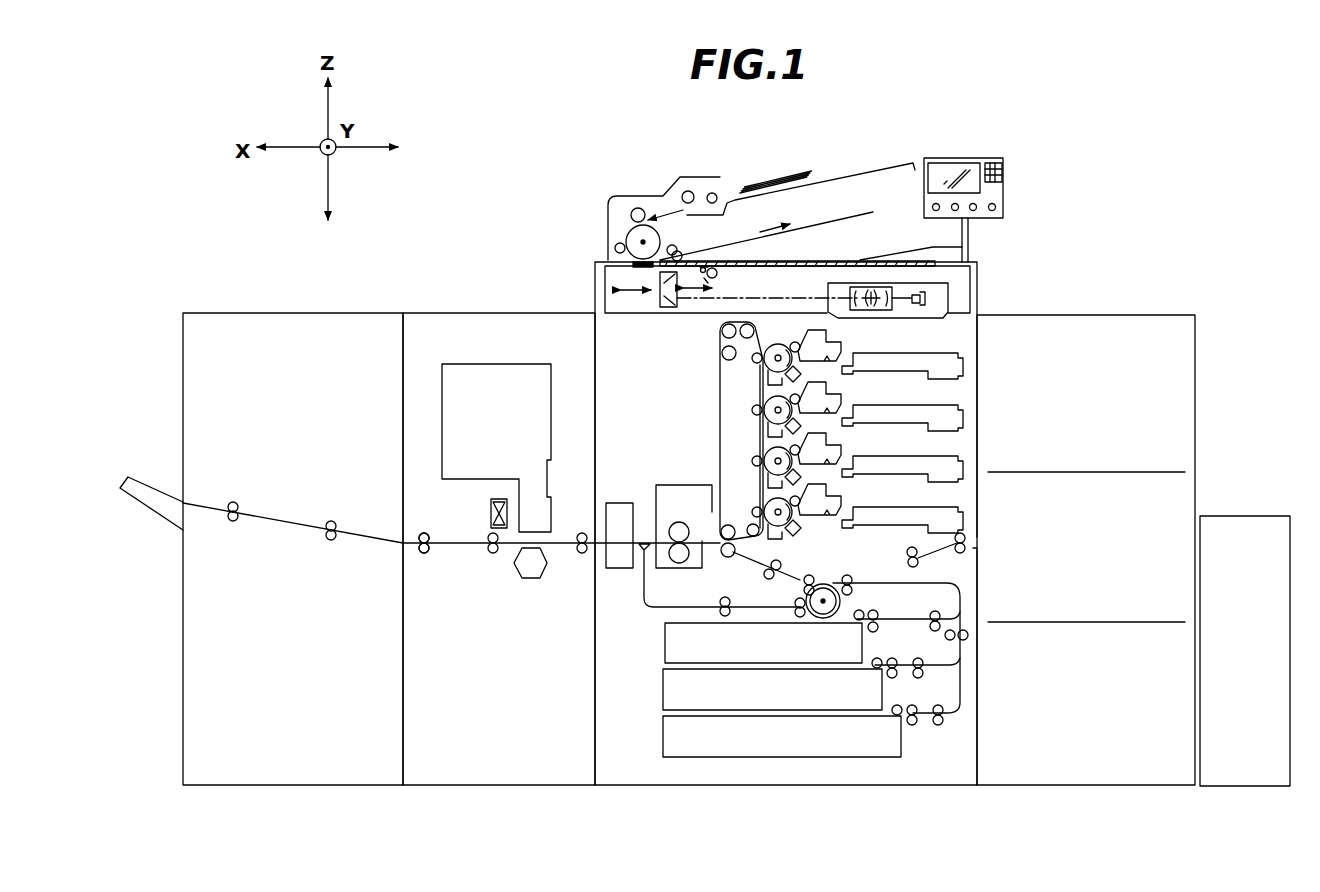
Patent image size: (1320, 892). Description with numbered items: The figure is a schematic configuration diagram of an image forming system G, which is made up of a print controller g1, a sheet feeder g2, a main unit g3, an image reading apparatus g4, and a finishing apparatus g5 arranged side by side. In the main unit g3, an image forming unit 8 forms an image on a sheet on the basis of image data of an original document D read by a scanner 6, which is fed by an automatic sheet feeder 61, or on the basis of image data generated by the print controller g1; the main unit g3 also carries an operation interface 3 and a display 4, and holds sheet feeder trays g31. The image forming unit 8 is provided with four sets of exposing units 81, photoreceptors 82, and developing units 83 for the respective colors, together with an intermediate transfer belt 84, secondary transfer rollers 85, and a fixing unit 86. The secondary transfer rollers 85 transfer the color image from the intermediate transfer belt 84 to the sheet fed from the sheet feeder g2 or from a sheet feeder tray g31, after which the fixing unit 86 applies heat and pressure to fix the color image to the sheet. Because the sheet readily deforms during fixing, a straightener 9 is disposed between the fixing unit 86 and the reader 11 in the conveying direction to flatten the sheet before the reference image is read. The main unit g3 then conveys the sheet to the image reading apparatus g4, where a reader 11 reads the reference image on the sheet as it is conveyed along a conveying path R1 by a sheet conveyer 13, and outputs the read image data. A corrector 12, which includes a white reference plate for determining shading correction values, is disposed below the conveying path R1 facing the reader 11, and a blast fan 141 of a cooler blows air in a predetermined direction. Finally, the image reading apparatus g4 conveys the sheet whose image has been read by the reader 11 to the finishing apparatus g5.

The image forming system G is at (984, 159).
The original document D is at (778, 184).
The automatic sheet feeder 61 is at (913, 165).
The display 4 is at (942, 170).
The operation interface 3 is at (1005, 175).
The scanner 6 is at (613, 290).
The finishing apparatus g5 is at (216, 312).
The image reading apparatus g4 is at (437, 312).
The main unit g3 is at (597, 288).
The sheet feeder g2 is at (1155, 312).
The print controller g1 is at (1250, 515).
The reader 11 is at (492, 377).
The blast fan 141 is at (490, 510).
The conveying path R1 is at (441, 538).
The sheet conveyer 13 is at (465, 557).
The corrector 12 is at (528, 578).
The straightener 9 is at (622, 503).
The fixing unit 86 is at (672, 484).
The image forming unit 8 is at (809, 445).
The intermediate transfer belt 84 is at (720, 372).
The photoreceptors 82 is at (763, 412).
The developing units 83 is at (840, 398).
The exposing units 81 is at (965, 420).
The secondary transfer rollers 85 is at (735, 548).
The sheet feeder trays g31 is at (734, 763).